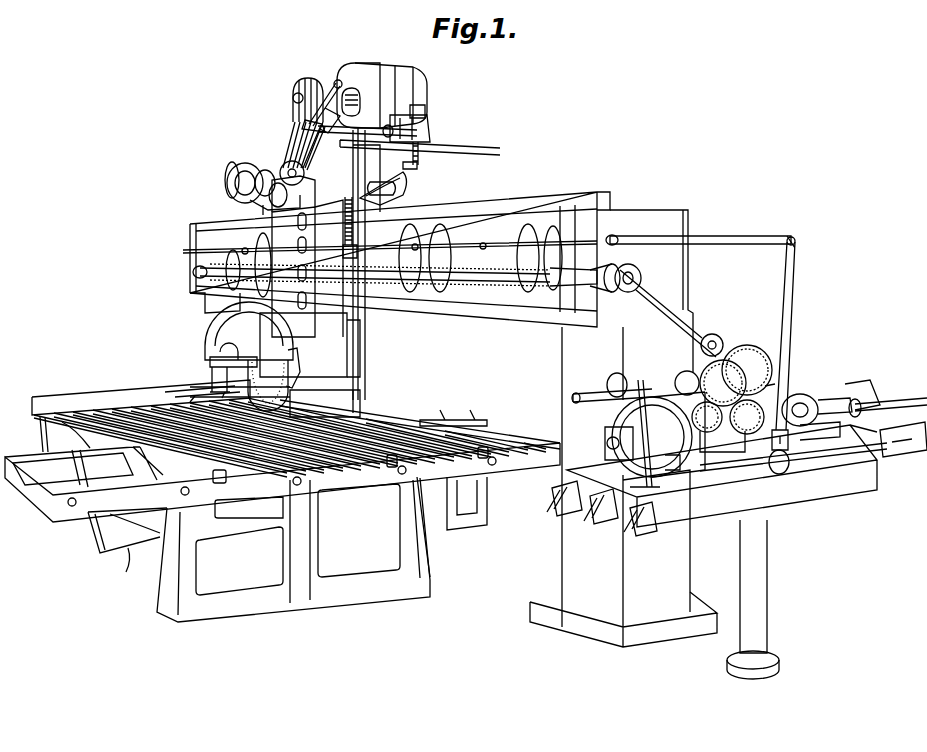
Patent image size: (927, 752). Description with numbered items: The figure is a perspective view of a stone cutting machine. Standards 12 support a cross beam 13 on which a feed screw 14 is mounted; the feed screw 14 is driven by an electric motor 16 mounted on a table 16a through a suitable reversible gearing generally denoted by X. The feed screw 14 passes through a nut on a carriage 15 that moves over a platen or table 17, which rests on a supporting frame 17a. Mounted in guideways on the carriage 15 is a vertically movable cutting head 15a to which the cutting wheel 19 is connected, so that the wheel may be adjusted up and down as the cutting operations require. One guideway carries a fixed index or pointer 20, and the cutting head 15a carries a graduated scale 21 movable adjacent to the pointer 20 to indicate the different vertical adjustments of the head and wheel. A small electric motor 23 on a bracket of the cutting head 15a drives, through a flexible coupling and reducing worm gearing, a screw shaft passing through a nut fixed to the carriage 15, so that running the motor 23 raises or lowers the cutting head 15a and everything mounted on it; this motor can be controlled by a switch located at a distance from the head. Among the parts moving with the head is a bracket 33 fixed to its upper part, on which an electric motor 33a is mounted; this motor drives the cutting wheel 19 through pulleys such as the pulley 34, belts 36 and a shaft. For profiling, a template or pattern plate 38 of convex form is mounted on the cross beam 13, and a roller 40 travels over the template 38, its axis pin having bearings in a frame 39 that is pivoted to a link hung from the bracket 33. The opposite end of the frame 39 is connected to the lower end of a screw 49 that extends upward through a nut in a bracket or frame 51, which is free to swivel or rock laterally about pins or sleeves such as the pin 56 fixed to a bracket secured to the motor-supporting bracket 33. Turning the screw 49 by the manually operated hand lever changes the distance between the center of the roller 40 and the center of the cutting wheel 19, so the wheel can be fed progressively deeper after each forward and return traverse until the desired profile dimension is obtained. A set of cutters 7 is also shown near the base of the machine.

The cutters 7 is at (612, 531).
The standards 12 is at (195, 300).
The cross beam 13 is at (541, 200).
The feed screw 14 is at (497, 282).
The carriage 15 is at (367, 303).
The cutting head 15a is at (337, 323).
The electric motor 16 is at (600, 415).
The table 16a is at (692, 498).
The platen or table 17 is at (120, 391).
The supporting frame 17a is at (168, 578).
The cutting wheel 19 is at (216, 374).
The fixed index or pointer 20 is at (347, 247).
The graduated scale 21 is at (345, 228).
The small electric motor 23 is at (233, 177).
The bracket 33 is at (450, 152).
The electric motor 33a is at (412, 78).
The pulley 34 is at (293, 98).
The belts 36 is at (285, 136).
The template or pattern plate 38 is at (412, 196).
The frame 39 is at (420, 171).
The roller 40 is at (370, 188).
The screw 49 is at (427, 97).
The bracket or frame 51 is at (432, 124).
The pin or sleeve 56 is at (335, 83).
The reversible gearing X is at (777, 393).